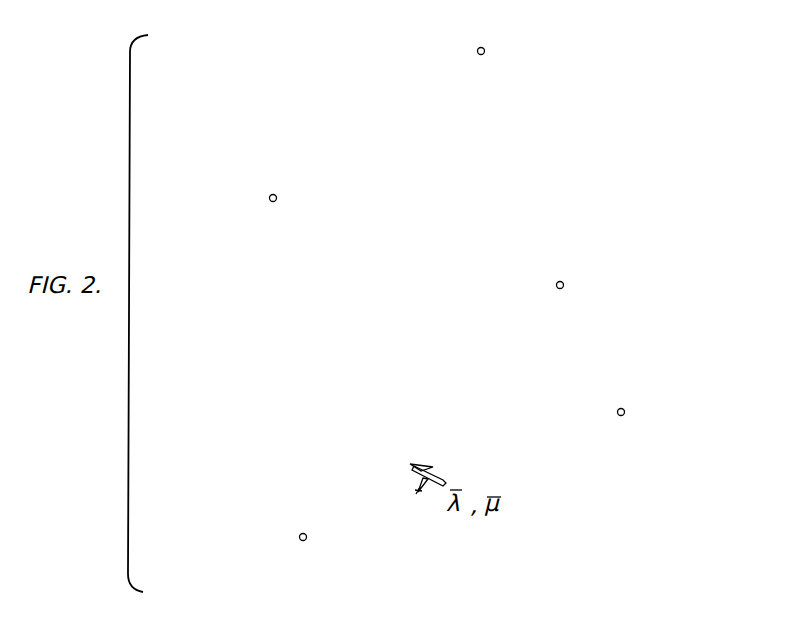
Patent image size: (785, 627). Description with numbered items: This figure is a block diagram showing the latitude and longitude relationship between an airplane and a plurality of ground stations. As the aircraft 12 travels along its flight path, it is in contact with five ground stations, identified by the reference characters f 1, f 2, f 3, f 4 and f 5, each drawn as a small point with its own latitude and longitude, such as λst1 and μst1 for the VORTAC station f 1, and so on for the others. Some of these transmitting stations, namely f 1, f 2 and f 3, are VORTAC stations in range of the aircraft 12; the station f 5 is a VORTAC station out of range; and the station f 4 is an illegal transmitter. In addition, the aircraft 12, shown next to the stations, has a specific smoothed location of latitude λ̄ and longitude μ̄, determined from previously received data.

The aircraft 12 is at (420, 478).
The point f1 1 is at (363, 535).
The point f2 2 is at (680, 412).
The point f3 3 is at (333, 195).
The point f4 4 is at (619, 282).
The point f5 5 is at (538, 48).